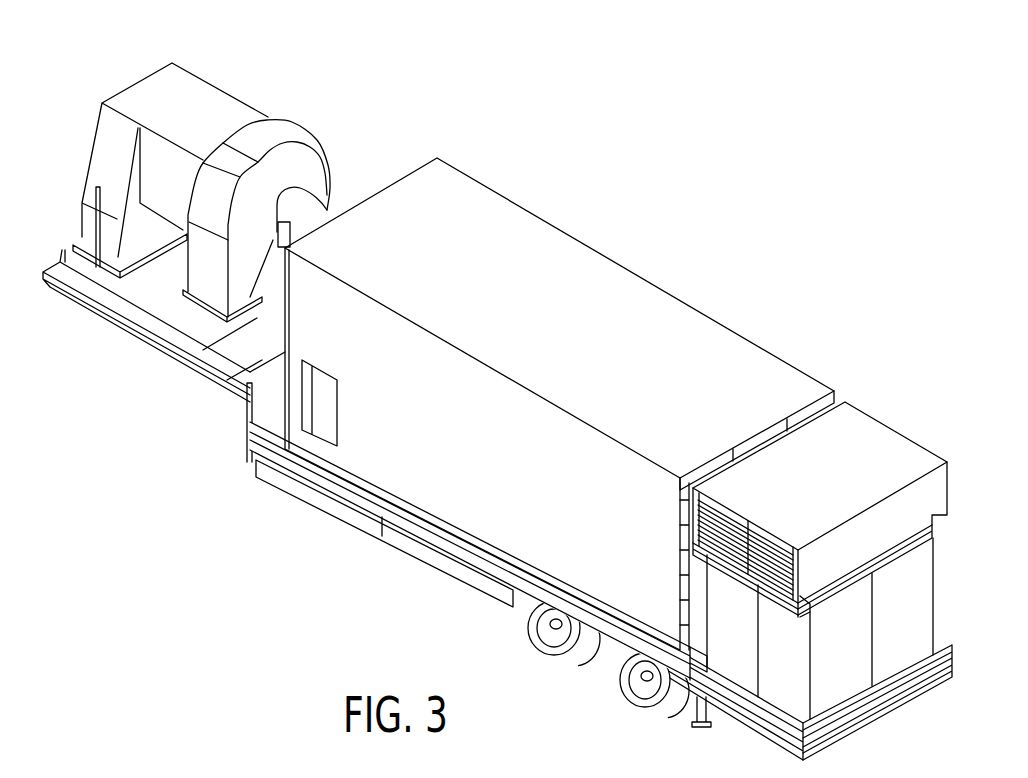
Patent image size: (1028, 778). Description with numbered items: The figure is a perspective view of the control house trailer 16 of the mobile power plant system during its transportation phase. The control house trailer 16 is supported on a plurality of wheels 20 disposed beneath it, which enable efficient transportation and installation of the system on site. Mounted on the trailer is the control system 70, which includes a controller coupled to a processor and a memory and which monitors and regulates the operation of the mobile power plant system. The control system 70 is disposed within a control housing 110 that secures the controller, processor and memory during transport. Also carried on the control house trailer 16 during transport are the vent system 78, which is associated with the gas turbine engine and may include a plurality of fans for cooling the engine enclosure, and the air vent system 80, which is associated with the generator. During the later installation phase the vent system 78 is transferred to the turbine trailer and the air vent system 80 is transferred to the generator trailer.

The control house trailer 16 is at (497, 508).
The wheels 20 is at (556, 657).
The control system 70 is at (559, 404).
The vent system 78 is at (318, 80).
The air vent system 80 is at (930, 410).
The control housing 110 is at (690, 307).